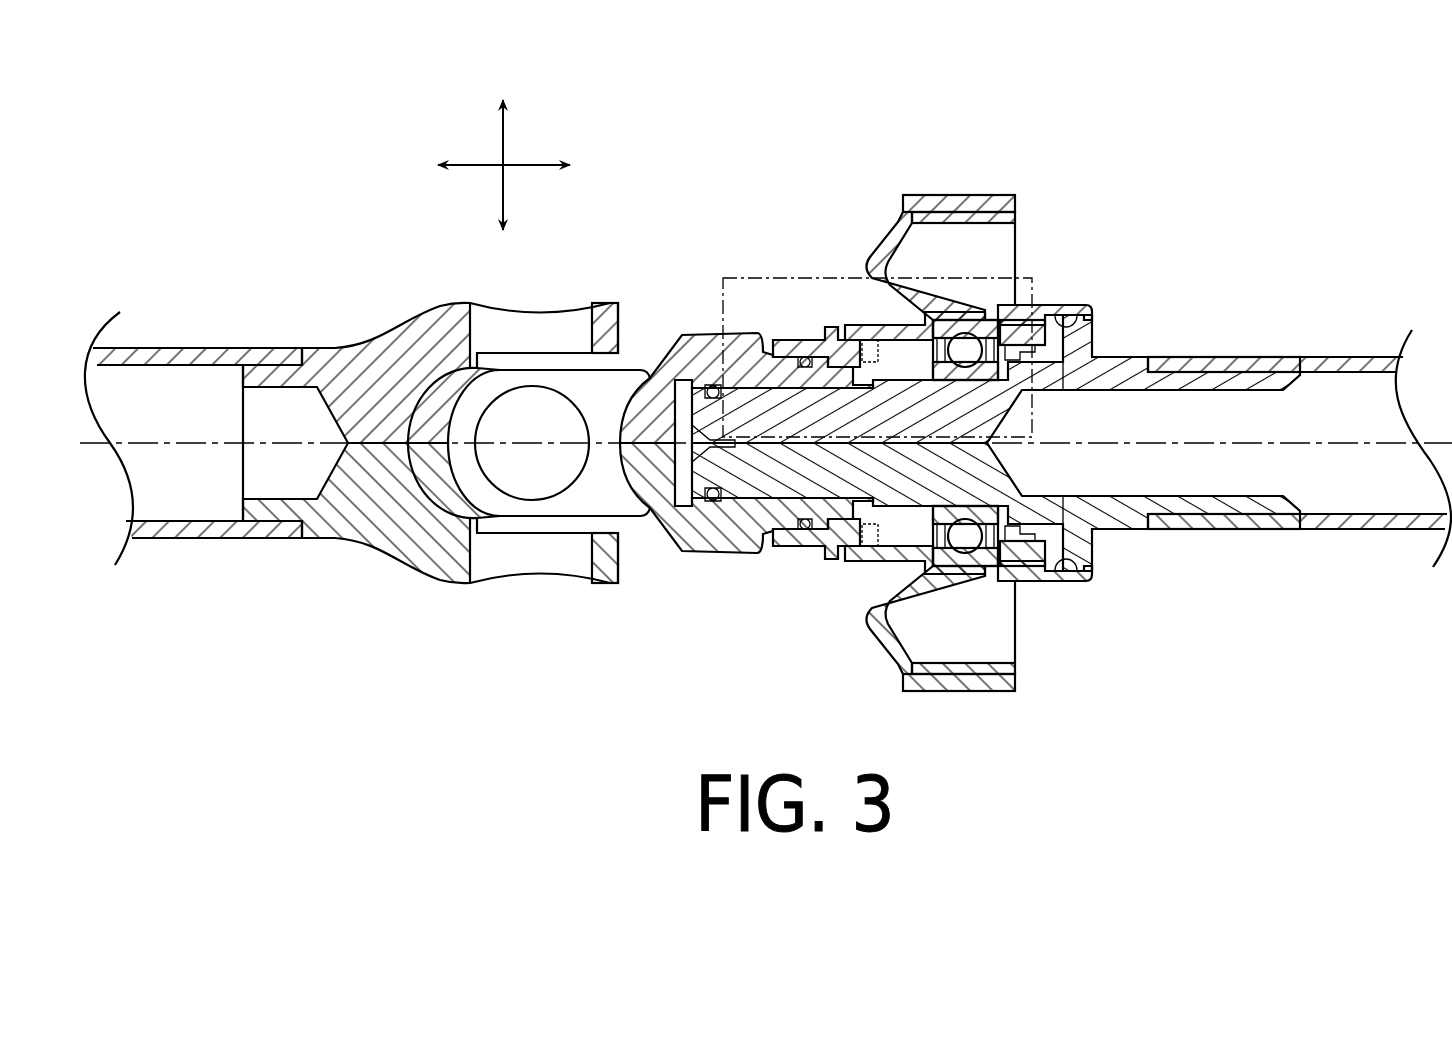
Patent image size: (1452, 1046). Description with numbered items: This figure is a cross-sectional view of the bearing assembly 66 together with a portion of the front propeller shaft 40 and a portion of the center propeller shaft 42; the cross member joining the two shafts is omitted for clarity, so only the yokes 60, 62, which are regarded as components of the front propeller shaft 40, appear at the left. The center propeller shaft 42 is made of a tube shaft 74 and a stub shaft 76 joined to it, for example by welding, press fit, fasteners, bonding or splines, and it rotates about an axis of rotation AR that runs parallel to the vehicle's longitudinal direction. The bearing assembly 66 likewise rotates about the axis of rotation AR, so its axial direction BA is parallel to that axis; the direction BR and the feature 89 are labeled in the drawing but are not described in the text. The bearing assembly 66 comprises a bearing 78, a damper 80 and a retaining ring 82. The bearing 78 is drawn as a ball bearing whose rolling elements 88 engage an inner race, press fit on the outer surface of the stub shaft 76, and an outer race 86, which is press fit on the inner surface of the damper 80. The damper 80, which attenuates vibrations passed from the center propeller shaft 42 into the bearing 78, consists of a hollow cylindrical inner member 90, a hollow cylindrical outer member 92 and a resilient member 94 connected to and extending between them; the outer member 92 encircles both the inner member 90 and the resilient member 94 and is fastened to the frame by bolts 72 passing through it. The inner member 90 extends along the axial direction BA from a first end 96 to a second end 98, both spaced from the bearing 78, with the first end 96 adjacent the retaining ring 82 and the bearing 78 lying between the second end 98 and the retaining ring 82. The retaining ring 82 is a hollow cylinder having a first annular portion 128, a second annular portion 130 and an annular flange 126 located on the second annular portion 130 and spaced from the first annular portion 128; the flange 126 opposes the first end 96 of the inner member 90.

The front propeller shaft 40 is at (242, 312).
The center propeller shaft 42 is at (1299, 396).
The yoke 60 is at (388, 562).
The yoke 62 is at (660, 352).
The bearing assembly 66 is at (947, 220).
The bolts 72 is at (1368, 356).
The tube shaft 74 is at (1272, 356).
The stub shaft 76 is at (1133, 357).
The bearing 78 is at (1003, 462).
The damper 80 is at (933, 628).
The retaining ring 82 is at (796, 558).
The outer race 86 is at (948, 553).
The rolling elements 88 is at (968, 543).
The bore 89 is at (1003, 425).
The inner member 90 is at (1096, 322).
The outer member 92 is at (946, 195).
The resilient member 94 is at (893, 226).
The first end 96 is at (853, 560).
The second end 98 is at (1094, 567).
The flange 126 is at (790, 340).
The first annular portion 128 is at (878, 348).
The second annular portion 130 is at (722, 295).
The axis of rotation AR is at (1362, 443).
The axial direction BA is at (522, 165).
The bearing radial direction BR is at (506, 185).